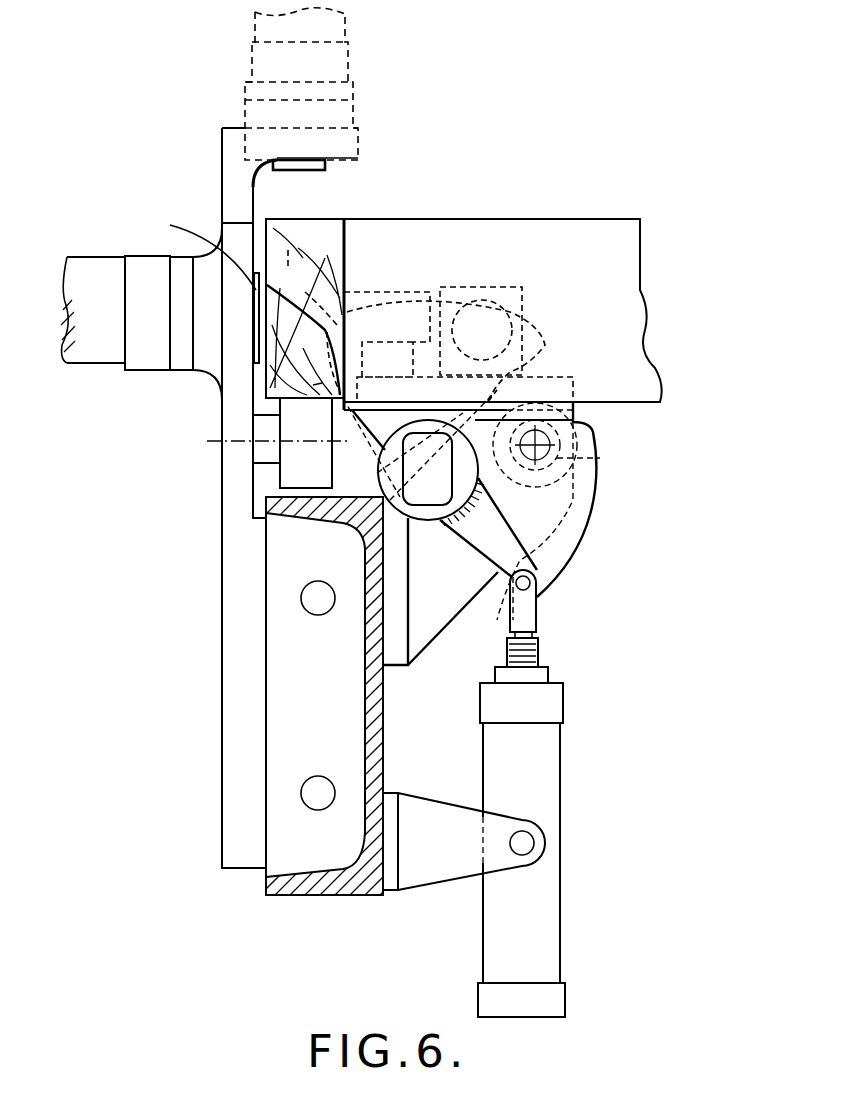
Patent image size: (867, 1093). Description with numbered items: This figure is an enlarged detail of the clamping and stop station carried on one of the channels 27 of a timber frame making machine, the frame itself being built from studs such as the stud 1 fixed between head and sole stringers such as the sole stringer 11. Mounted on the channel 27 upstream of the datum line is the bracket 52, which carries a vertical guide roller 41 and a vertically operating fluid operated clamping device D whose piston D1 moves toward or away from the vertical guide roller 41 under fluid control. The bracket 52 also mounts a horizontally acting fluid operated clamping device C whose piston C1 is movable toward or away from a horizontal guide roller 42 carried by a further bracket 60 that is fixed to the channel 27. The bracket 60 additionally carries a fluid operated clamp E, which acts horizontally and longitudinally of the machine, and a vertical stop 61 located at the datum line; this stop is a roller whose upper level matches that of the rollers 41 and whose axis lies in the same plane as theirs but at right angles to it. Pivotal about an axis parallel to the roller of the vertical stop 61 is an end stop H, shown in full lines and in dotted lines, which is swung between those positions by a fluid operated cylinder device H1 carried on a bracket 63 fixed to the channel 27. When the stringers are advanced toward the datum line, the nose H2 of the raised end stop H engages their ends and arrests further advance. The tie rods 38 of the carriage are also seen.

The stud 1 is at (572, 237).
The sole stringer 11 is at (318, 247).
The channel 27 is at (375, 728).
The tie rods 38 is at (328, 777).
The vertical guide roller 41 is at (293, 472).
The horizontal guide roller 42 is at (355, 300).
The bracket 52 is at (245, 577).
The bracket 60 is at (533, 510).
The vertical stop 61 is at (600, 458).
The bracket 63 is at (438, 853).
The horizontally acting fluid operated clamping device C is at (98, 340).
The piston C1 is at (198, 249).
The vertically operating fluid operated clamping device D is at (350, 62).
The piston D1 is at (310, 165).
The fluid operated clamp E is at (522, 292).
The end stop H is at (563, 542).
The fluid operated cylinder device H1 is at (538, 770).
The nose H2 is at (587, 440).